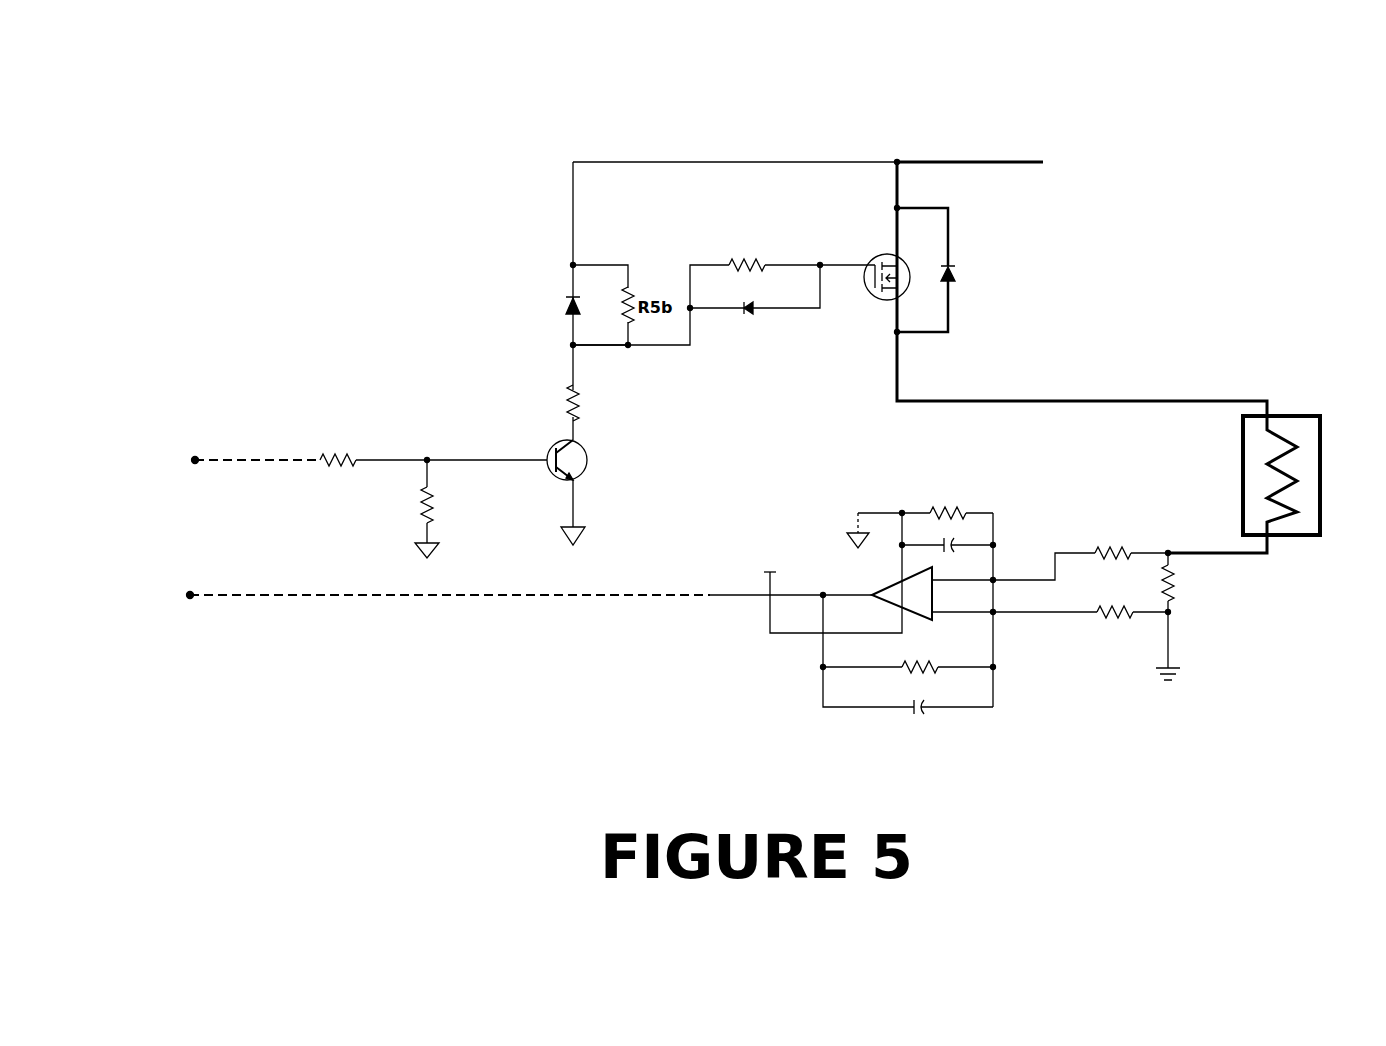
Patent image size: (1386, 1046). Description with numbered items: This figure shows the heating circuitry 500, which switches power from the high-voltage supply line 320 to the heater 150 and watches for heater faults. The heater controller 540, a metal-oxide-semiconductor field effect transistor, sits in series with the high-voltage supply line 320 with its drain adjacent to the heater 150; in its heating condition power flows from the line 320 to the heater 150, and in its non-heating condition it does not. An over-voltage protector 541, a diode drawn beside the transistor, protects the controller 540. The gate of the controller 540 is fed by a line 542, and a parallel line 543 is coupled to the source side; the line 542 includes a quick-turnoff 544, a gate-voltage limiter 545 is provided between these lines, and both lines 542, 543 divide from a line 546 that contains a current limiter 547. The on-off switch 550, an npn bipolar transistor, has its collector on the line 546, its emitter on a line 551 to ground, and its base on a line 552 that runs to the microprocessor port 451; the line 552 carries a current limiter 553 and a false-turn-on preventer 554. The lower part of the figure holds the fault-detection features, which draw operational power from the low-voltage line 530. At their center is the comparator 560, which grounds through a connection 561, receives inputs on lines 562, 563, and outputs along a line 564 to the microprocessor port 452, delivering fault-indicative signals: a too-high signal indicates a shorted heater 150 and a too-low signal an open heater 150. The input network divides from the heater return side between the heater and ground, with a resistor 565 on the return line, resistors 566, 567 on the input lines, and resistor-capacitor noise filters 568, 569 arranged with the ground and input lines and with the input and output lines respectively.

The heater 150 is at (1300, 475).
The high-voltage supply line 320 is at (987, 157).
The microprocessor port 451 is at (233, 461).
The second input terminal 452 is at (428, 596).
The heating circuitry 500 is at (722, 438).
The low-voltage line 530 is at (770, 572).
The heater controller 540 is at (881, 274).
The over-voltage protector 541 is at (955, 272).
The line 542 is at (838, 265).
The parallel line 543 is at (681, 162).
The quick-turnoff 544 is at (754, 300).
The gate-voltage limiter 545 is at (581, 294).
The line 546 is at (575, 356).
The current limiter 547 is at (570, 403).
The on-off switch 550 is at (573, 470).
The line to ground 551 is at (570, 515).
The line 552 is at (478, 460).
The current limiter 553 is at (424, 509).
The false-turn-on preventer 554 is at (339, 459).
The amplifier IC5 560 is at (922, 593).
The ground connection 561 is at (900, 566).
The output node 562 is at (1015, 580).
The feedback node 563 is at (1030, 613).
The input line 564 is at (745, 593).
The resistor R5f 565 is at (1173, 583).
The resistor R5g 566 is at (1131, 552).
The resistor R5h 567 is at (1157, 635).
The feedback network R5i and C5a 568 is at (948, 531).
The feedback network R5j and C5b 569 is at (908, 664).